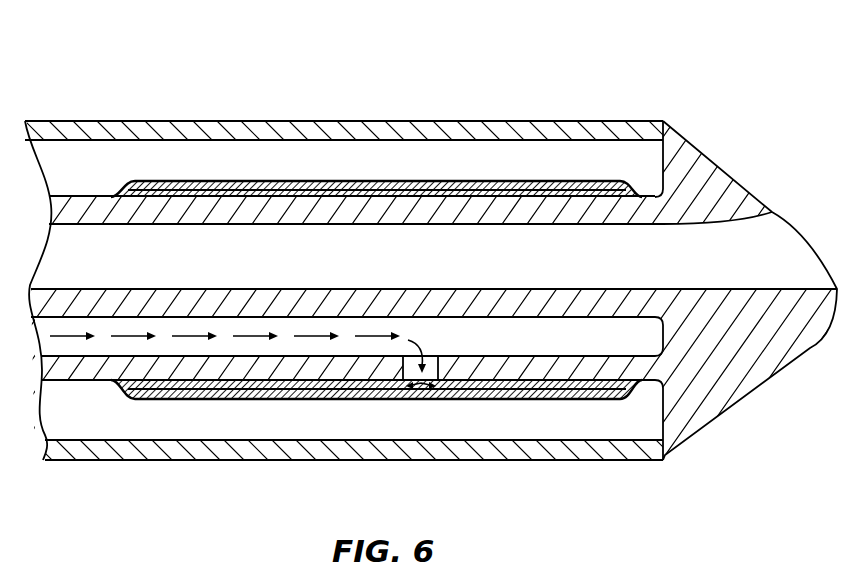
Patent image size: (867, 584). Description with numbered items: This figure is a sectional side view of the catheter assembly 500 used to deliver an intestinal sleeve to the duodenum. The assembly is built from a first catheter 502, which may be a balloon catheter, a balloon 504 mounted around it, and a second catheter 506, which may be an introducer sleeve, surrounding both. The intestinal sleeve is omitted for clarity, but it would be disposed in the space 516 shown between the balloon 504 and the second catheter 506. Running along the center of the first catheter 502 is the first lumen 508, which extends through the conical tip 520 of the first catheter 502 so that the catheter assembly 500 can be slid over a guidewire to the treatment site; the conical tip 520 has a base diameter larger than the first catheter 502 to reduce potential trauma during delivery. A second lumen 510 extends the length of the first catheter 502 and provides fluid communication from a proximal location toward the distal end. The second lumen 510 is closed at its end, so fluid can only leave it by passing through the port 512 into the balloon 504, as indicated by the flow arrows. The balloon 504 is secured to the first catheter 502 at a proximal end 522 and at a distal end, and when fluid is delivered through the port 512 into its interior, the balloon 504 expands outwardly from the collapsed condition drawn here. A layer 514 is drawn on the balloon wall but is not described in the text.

The catheter assembly 500 is at (322, 86).
The first catheter 502 is at (233, 291).
The balloon 504 is at (437, 179).
The second catheter 506 is at (142, 120).
The first lumen 508 is at (407, 270).
The second lumen 510 is at (583, 346).
The port 512 is at (432, 367).
The insulating layer 514 is at (552, 195).
The space 516 is at (518, 430).
The conical tip 520 is at (737, 413).
The proximal end 522 is at (113, 382).